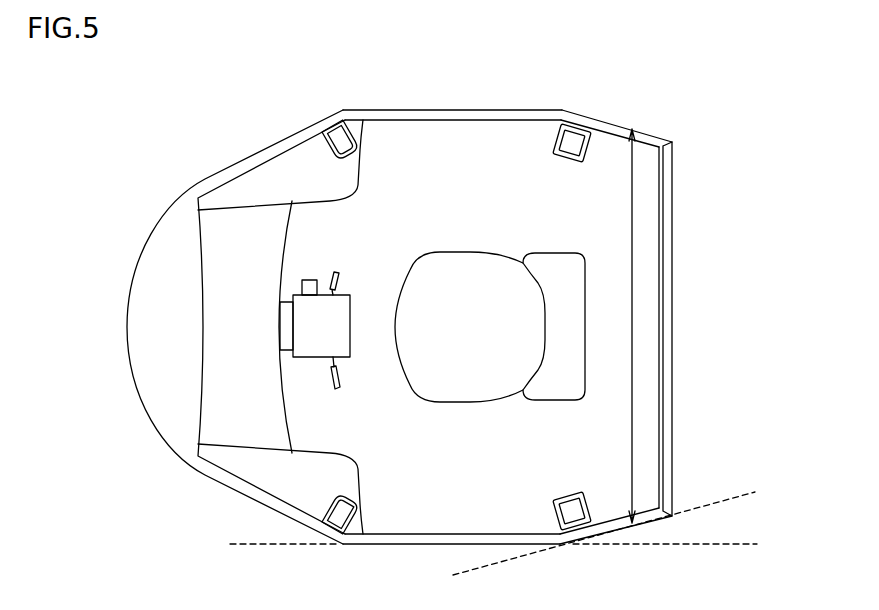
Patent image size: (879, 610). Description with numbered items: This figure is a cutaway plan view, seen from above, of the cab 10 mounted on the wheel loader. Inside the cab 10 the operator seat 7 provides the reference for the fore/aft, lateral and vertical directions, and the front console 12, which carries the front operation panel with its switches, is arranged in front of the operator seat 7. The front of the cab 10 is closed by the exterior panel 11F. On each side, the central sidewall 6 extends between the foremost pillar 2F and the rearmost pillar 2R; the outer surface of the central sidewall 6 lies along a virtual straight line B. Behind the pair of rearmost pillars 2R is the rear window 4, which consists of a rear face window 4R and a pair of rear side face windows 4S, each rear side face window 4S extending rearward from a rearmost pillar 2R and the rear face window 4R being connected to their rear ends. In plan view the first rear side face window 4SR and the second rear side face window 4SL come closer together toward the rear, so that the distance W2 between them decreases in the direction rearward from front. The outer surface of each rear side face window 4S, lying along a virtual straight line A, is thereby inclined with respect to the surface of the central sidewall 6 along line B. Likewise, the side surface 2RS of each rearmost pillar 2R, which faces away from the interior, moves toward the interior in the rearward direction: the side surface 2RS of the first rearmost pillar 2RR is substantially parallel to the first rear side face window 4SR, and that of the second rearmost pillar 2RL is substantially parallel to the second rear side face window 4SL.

The cab 10 is at (709, 106).
The exterior panel 11F is at (160, 327).
The front console 12 is at (233, 267).
The central sidewall 6 is at (424, 109).
The operator seat 7 is at (453, 302).
The foremost pillar 2F is at (363, 120).
The side surface 2RS is at (585, 118).
The rearmost pillar 2R is at (626, 335).
The first rearmost pillar 2RR is at (593, 143).
The second rearmost pillar 2RL is at (593, 510).
The rear window 4 is at (735, 326).
The rear face window 4R is at (672, 337).
The rear side face window 4S is at (724, 326).
The first rear side face window 4SR is at (650, 128).
The second rear side face window 4SL is at (652, 517).
The distance W2 is at (617, 326).
The virtual straight line A is at (605, 535).
The virtual straight line B is at (496, 544).